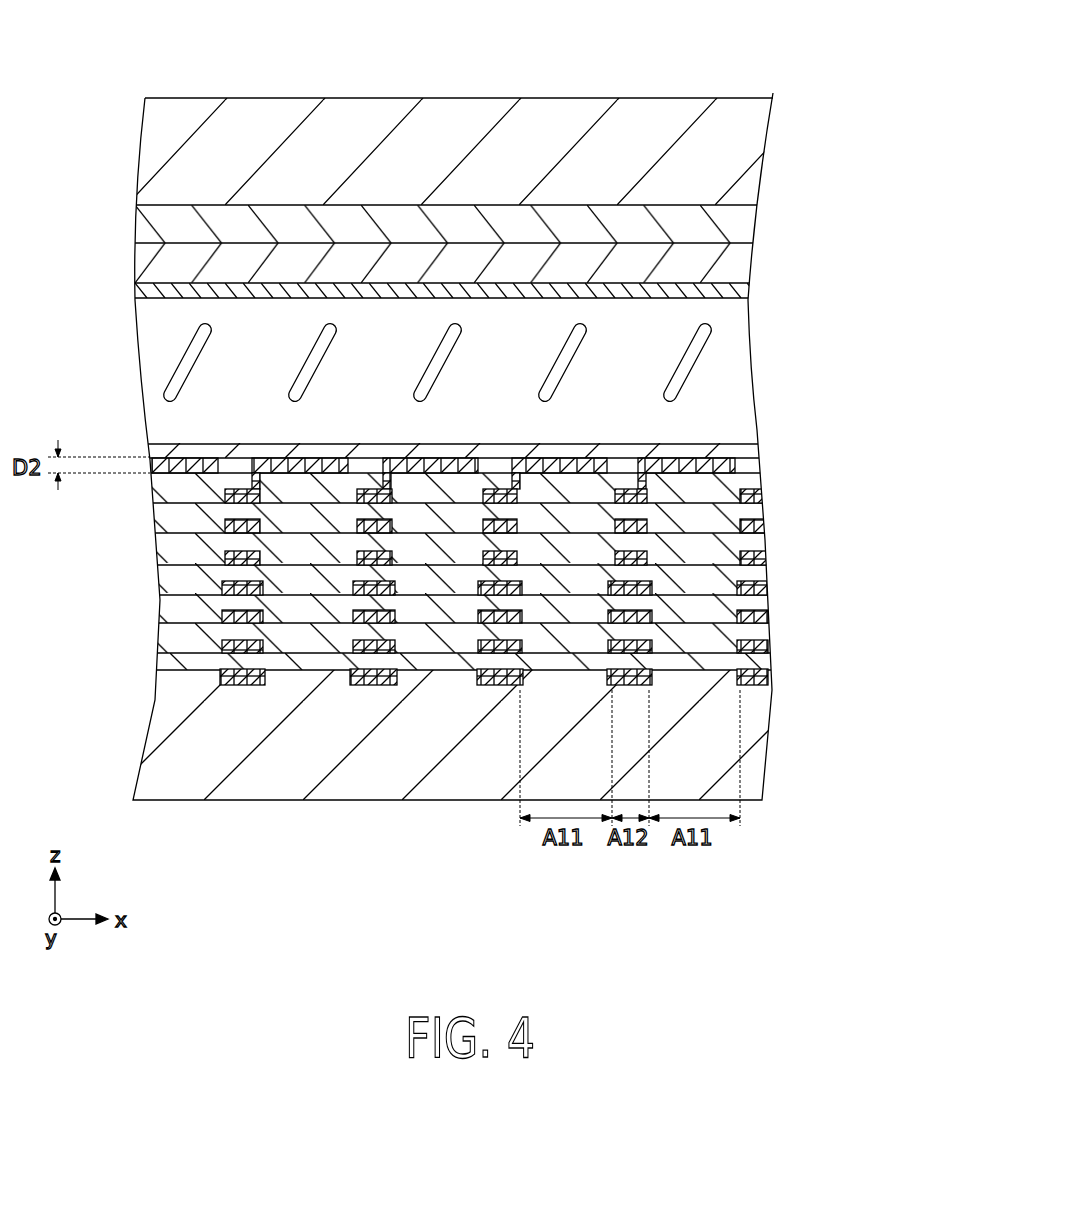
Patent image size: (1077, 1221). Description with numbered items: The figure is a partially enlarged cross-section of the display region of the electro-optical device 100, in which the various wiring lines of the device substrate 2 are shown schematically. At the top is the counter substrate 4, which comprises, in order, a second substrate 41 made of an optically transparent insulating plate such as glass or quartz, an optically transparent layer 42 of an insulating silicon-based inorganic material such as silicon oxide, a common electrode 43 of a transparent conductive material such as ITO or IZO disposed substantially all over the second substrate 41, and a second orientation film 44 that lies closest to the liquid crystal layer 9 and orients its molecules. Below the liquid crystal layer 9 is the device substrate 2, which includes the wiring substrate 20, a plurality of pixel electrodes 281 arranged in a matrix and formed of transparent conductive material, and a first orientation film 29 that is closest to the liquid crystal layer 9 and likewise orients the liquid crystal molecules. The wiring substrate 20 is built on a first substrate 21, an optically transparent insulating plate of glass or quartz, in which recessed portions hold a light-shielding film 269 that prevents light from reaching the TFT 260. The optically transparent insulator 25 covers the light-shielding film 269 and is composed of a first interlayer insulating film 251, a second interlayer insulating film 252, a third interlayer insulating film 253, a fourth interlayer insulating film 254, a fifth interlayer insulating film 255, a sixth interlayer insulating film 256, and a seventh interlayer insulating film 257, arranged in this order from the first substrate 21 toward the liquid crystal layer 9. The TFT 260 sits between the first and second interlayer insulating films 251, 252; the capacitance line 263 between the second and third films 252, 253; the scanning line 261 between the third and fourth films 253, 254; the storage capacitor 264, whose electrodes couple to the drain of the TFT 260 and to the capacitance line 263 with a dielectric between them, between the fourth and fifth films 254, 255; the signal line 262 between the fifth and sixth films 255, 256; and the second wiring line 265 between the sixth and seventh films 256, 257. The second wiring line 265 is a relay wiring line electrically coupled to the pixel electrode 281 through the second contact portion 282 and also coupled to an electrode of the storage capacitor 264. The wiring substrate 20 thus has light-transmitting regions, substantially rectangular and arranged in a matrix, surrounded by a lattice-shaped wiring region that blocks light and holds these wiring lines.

The electro-optical device 100 is at (482, 407).
The counter substrate 4 is at (491, 205).
The second substrate 41 is at (733, 146).
The optically transparent layer 42 is at (735, 231).
The common electrode 43 is at (735, 273).
The second orientation film 44 is at (473, 297).
The liquid crystal layer 9 is at (733, 362).
The device substrate 2 is at (482, 594).
The first orientation film 29 is at (745, 452).
The pixel electrode 281 is at (745, 464).
The second contact portion 282 is at (245, 473).
The wiring substrate 20 is at (466, 594).
The insulator 25 is at (411, 587).
The seventh interlayer insulating film 257 is at (158, 490).
The sixth interlayer insulating film 256 is at (158, 520).
The fifth interlayer insulating film 255 is at (158, 551).
The fourth interlayer insulating film 254 is at (160, 582).
The third interlayer insulating film 253 is at (160, 611).
The second interlayer insulating film 252 is at (160, 640).
The first interlayer insulating film 251 is at (432, 675).
The second wiring line 265 is at (765, 496).
The signal line 262 is at (765, 526).
The storage capacitor 264 is at (767, 558).
The scanning line 261 is at (768, 588).
The capacitance line 263 is at (769, 616).
The TFT 260 is at (770, 646).
The light-shielding film 269 is at (533, 685).
The first substrate 21 is at (745, 736).